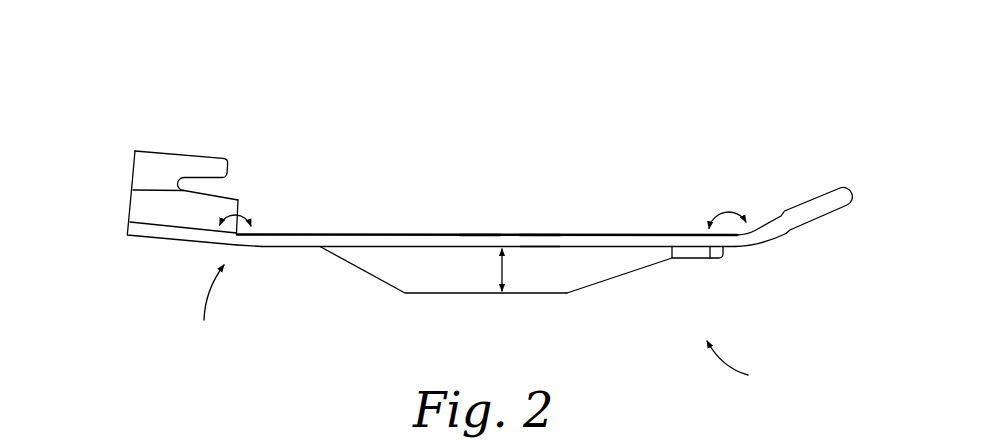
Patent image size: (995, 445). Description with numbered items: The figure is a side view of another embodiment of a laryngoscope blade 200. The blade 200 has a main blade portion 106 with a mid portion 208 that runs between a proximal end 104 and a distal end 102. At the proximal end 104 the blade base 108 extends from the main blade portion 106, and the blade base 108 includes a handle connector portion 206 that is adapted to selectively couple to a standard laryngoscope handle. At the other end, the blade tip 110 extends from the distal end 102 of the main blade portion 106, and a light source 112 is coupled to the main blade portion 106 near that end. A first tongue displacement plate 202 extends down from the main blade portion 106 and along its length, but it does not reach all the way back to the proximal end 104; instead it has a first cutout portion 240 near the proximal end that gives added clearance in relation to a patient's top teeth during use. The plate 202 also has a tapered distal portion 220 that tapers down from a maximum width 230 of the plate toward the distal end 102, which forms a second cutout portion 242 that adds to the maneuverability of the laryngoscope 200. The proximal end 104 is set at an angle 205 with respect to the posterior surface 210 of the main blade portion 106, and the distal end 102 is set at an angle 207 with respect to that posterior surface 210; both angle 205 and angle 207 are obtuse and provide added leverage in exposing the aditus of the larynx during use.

The laryngoscope blade 200 is at (693, 80).
The handle connector portion 206 is at (155, 160).
The blade base 108 is at (138, 207).
The angle 205 is at (247, 213).
The proximal end 104 is at (237, 245).
The first cutout portion 240 is at (204, 309).
The main blade portion 106 is at (450, 234).
The posterior surface 210 is at (473, 234).
The mid portion 208 is at (532, 240).
The first tongue displacement plate 202 is at (557, 282).
The tapered distal portion 220 is at (632, 277).
The maximum width 230 is at (498, 274).
The light source 112 is at (697, 256).
The distal end 102 is at (736, 247).
The angle 207 is at (724, 212).
The blade tip 110 is at (820, 200).
The second cutout portion 242 is at (749, 368).